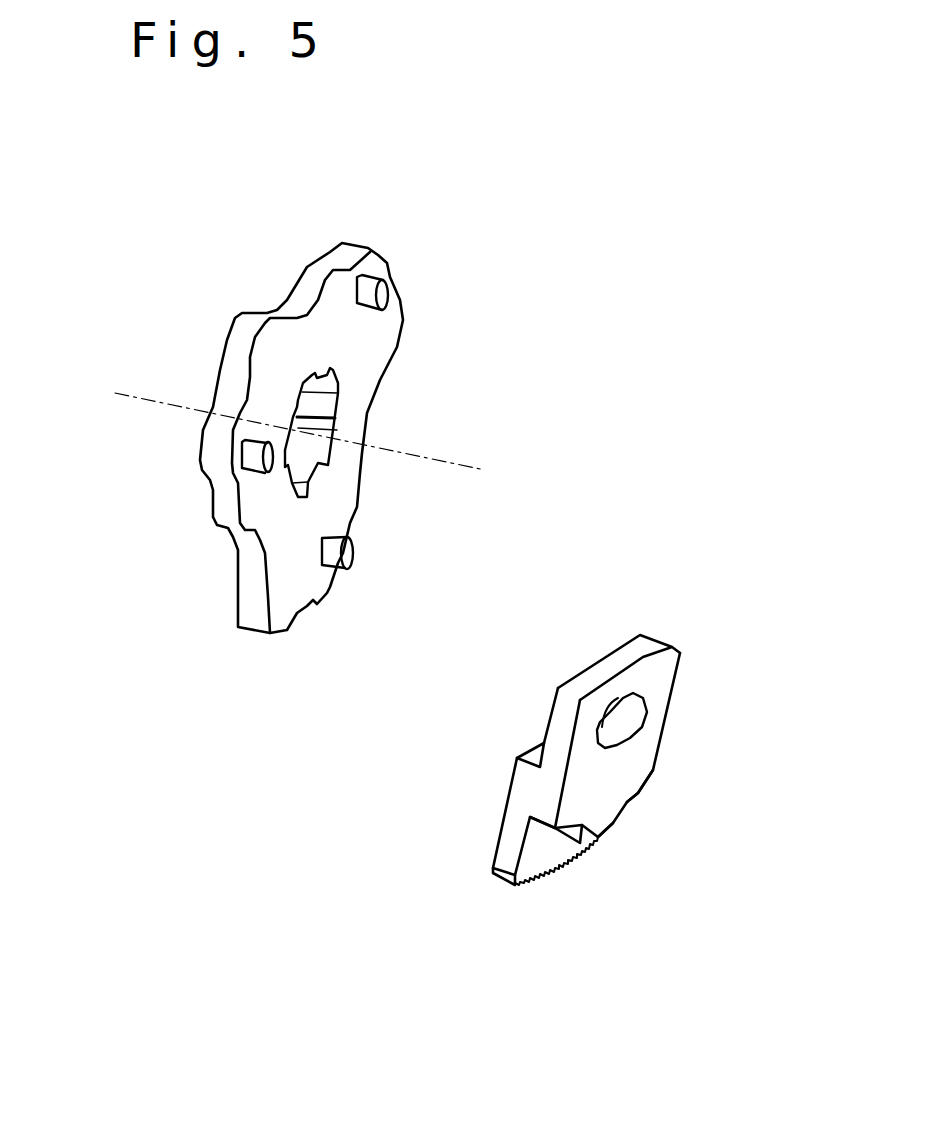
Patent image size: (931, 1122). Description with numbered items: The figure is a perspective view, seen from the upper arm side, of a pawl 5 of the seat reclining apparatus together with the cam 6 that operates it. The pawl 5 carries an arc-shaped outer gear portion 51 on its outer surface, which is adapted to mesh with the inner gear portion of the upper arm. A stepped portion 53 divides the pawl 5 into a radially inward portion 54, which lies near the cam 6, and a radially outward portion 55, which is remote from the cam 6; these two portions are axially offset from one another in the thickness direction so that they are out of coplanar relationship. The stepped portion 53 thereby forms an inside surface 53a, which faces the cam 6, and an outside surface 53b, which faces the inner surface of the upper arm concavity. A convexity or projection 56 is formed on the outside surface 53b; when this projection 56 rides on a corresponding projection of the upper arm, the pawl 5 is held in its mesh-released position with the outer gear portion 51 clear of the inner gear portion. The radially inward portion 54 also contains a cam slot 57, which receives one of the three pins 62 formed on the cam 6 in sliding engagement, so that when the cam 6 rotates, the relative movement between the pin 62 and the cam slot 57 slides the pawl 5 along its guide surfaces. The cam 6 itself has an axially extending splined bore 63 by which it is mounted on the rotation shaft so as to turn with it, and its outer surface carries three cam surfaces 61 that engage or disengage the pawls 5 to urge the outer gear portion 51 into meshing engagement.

The pawl 5 is at (684, 635).
The outer gear portion 51 is at (560, 867).
The stepped portion 53 is at (537, 783).
The inside surface 53a is at (536, 757).
The outside surface 53b is at (638, 793).
The radially inward portion 54 is at (570, 715).
The radially outward portion 55 is at (507, 850).
The projection 56 is at (598, 818).
The cam slot 57 is at (632, 716).
The cam 6 is at (233, 294).
The cam surface 61 is at (378, 255).
The pin 62 is at (382, 297).
The bore 63 is at (317, 445).